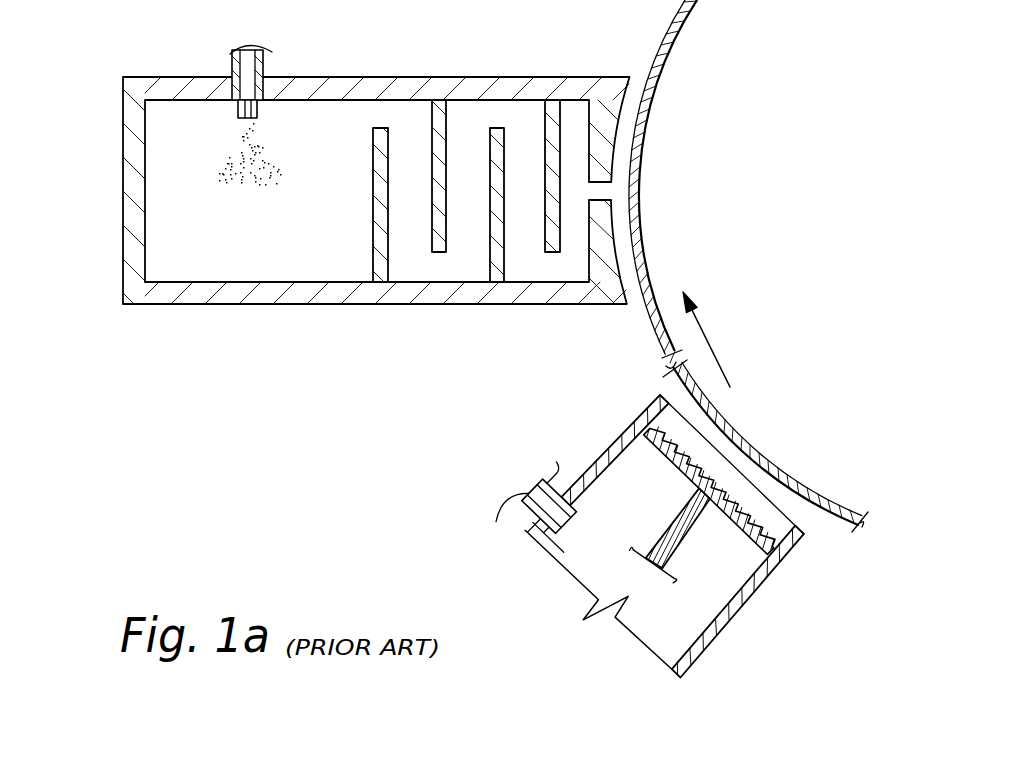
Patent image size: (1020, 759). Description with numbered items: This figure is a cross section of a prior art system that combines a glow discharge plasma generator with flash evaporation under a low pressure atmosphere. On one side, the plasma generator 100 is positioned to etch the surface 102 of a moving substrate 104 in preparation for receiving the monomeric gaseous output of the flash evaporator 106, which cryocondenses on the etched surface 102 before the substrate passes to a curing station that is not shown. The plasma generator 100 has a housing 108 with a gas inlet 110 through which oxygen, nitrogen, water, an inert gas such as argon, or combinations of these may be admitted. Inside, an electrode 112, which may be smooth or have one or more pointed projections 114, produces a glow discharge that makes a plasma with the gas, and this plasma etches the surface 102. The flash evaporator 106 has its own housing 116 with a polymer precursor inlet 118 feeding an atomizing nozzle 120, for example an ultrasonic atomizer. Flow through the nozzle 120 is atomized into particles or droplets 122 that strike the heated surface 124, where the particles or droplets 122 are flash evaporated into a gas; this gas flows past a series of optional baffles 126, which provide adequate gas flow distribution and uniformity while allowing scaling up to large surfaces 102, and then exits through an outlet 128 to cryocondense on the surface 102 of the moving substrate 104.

The plasma generator 100 is at (610, 542).
The surface 102 is at (700, 393).
The moving substrate 104 is at (772, 454).
The flash evaporator 106 is at (376, 159).
The housing 108 is at (612, 452).
The gas inlet 110 is at (520, 508).
The electrode 112 is at (668, 528).
The pointed projections 114 is at (752, 538).
The housing 116 is at (364, 77).
The polymer precursor inlet 118 is at (229, 58).
The atomizing nozzle 120 is at (268, 126).
The particles or droplets 122 is at (231, 184).
The heated surface 124 is at (240, 282).
The baffles 126 is at (432, 127).
The outlet 128 is at (585, 190).